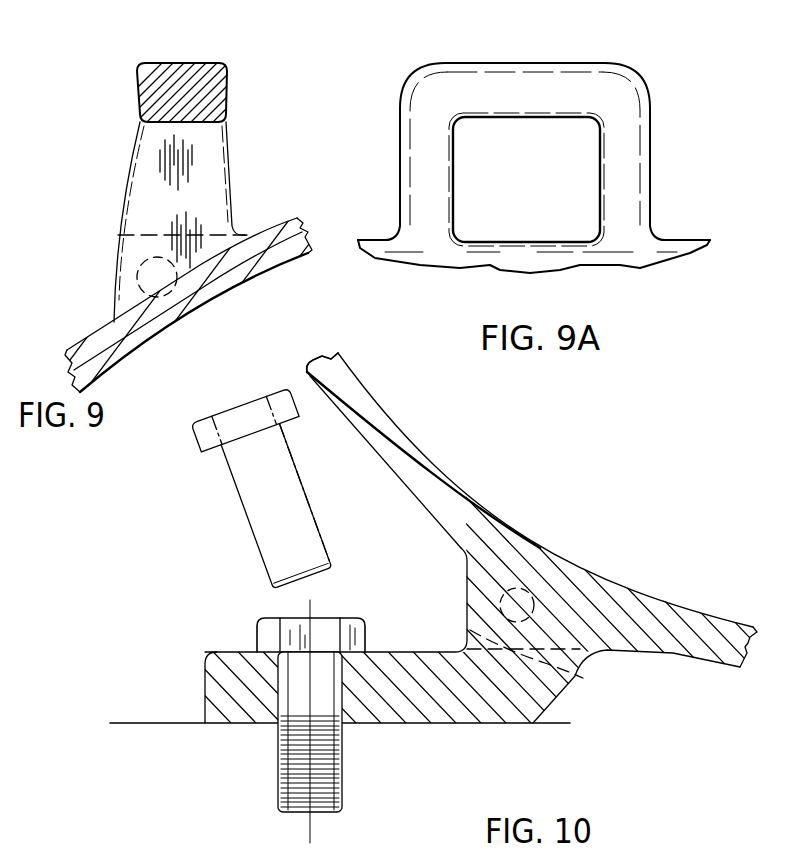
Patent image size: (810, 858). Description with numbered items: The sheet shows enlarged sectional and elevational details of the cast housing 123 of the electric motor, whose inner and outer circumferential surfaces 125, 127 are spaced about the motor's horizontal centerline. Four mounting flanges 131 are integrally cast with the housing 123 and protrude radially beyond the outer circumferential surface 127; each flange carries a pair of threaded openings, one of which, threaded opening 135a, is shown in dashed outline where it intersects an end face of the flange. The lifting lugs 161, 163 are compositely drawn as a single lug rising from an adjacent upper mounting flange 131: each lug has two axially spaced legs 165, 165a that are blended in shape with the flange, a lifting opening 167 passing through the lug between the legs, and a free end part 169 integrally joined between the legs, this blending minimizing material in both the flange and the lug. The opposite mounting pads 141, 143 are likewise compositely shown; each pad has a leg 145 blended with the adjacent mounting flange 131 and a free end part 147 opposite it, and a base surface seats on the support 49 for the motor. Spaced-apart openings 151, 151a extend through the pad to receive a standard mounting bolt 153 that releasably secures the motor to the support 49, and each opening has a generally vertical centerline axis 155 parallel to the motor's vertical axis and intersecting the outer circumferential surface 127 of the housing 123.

In FIG. 10, the support 49 is at (133, 722).
In FIG. 10, the housing 123 is at (312, 369).
In FIG. 10, the inner circumferential surface 125 is at (418, 447).
In FIG. 10, the outer circumferential surface 127 is at (423, 505).
In FIG. 9, the mounting flange 131 is at (133, 233).
In FIG. 10, the mounting flange 131 is at (587, 680).
In FIG. 9, the threaded opening 135a is at (157, 257).
In FIG. 10, the threaded opening 135a is at (527, 588).
In FIG. 10, the mounting pad 141 is at (301, 670).
In FIG. 10, the mounting pad 143 is at (301, 670).
In FIG. 10, the leg 145 is at (557, 691).
In FIG. 10, the free end part 147 is at (238, 737).
In FIG. 10, the opening 151 is at (227, 732).
In FIG. 10, the opening 151a is at (273, 695).
In FIG. 10, the mounting bolt 153 is at (262, 633).
In FIG. 10, the vertical centerline axis 155 is at (227, 722).
In FIG. 9, the lifting lug 161 is at (162, 76).
In FIG. 9, the lifting lug 163 is at (162, 76).
In FIG. 9, the leg 165 is at (131, 186).
In FIG. 9A, the leg 165 is at (408, 180).
In FIG. 9A, the leg 165a is at (651, 181).
In FIG. 9, the lifting opening 167 is at (160, 122).
In FIG. 9A, the lifting opening 167 is at (550, 122).
In FIG. 9, the free end part 169 is at (173, 63).
In FIG. 9A, the free end part 169 is at (526, 63).